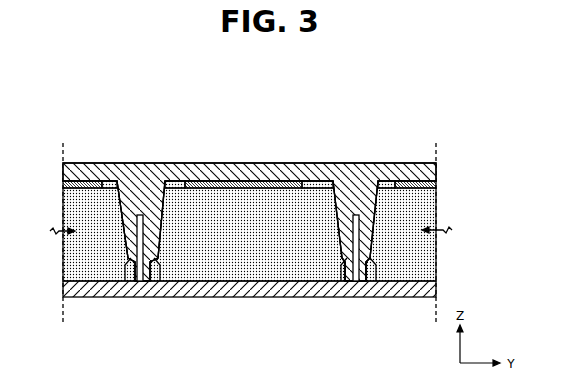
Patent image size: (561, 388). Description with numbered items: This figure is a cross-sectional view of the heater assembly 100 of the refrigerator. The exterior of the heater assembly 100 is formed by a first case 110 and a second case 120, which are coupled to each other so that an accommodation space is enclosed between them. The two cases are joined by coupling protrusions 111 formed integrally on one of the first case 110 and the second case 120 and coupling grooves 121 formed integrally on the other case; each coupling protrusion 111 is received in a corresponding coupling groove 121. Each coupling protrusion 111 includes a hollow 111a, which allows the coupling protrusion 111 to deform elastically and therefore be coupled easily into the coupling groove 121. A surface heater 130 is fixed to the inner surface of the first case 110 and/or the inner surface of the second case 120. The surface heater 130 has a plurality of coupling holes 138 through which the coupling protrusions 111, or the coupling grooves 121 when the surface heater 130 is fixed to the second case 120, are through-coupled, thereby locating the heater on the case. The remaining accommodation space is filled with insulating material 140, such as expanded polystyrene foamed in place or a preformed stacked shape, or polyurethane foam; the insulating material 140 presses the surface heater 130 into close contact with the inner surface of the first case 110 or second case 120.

The heater assembly 100 is at (385, 159).
The first case 110 is at (258, 163).
The coupling protrusion 111 is at (372, 200).
The hollow 111a is at (356, 240).
The second case 120 is at (305, 284).
The coupling groove 121 is at (366, 273).
The surface heater 130 is at (75, 183).
The coupling hole 138 is at (110, 184).
The insulating material 140 is at (77, 253).